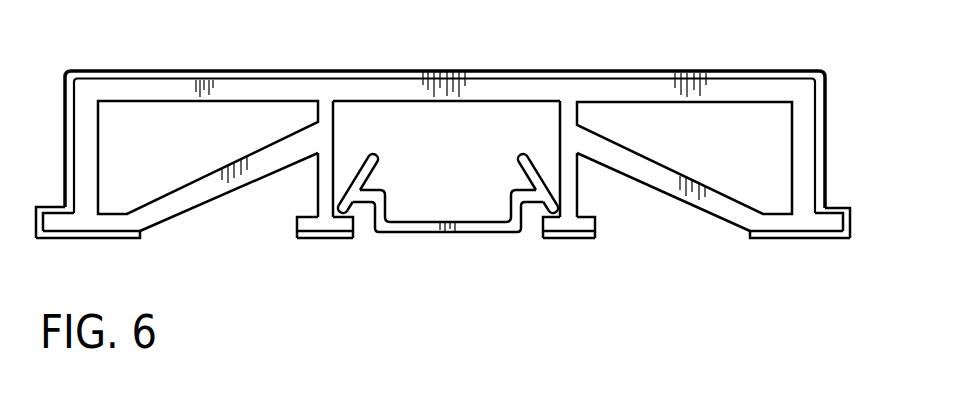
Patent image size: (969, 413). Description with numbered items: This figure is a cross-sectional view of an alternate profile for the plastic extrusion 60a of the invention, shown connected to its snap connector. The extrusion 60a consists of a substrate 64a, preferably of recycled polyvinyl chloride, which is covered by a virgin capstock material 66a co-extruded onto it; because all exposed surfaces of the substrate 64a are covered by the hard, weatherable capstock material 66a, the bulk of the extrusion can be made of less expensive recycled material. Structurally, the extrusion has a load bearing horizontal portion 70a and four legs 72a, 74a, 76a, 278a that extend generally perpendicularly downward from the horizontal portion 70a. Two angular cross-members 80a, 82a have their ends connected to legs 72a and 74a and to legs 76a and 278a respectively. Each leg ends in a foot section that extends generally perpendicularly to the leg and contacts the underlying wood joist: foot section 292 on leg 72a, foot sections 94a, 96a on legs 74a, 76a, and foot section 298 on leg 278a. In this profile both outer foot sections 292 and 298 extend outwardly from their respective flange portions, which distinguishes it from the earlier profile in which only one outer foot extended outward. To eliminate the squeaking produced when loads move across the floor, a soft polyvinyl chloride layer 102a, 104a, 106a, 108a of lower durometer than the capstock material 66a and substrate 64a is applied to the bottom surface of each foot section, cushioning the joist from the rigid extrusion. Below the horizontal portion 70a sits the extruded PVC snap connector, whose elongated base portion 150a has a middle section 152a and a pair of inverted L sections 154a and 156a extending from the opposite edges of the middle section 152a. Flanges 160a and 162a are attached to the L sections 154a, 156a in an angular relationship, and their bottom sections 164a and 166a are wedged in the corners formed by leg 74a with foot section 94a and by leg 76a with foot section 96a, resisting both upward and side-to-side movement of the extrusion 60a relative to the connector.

The extrusion 60a is at (685, 62).
The substrate 64a is at (492, 90).
The virgin capstock material 66a is at (392, 72).
The load bearing horizontal portion 70a is at (222, 90).
The leg 72a is at (100, 138).
The leg 74a is at (337, 142).
The leg 76a is at (557, 140).
The leg 278a is at (790, 142).
The angular cross-member 80a is at (187, 188).
The angular cross-member 82a is at (652, 168).
The foot section 292 is at (55, 205).
The foot section 298 is at (838, 216).
The foot section 94a is at (297, 221).
The foot section 96a is at (597, 222).
The soft polyvinyl chloride layer 102a is at (80, 239).
The soft polyvinyl chloride layer 104a is at (333, 240).
The soft polyvinyl chloride layer 106a is at (566, 239).
The soft polyvinyl chloride layer 108a is at (825, 239).
The elongated base portion 150a is at (448, 211).
The middle section 152a is at (393, 218).
The inverted L section 154a is at (382, 190).
The inverted L section 156a is at (511, 188).
The flange 160a is at (383, 162).
The flange 162a is at (509, 162).
The bottom section 164a is at (350, 208).
The bottom section 166a is at (541, 208).